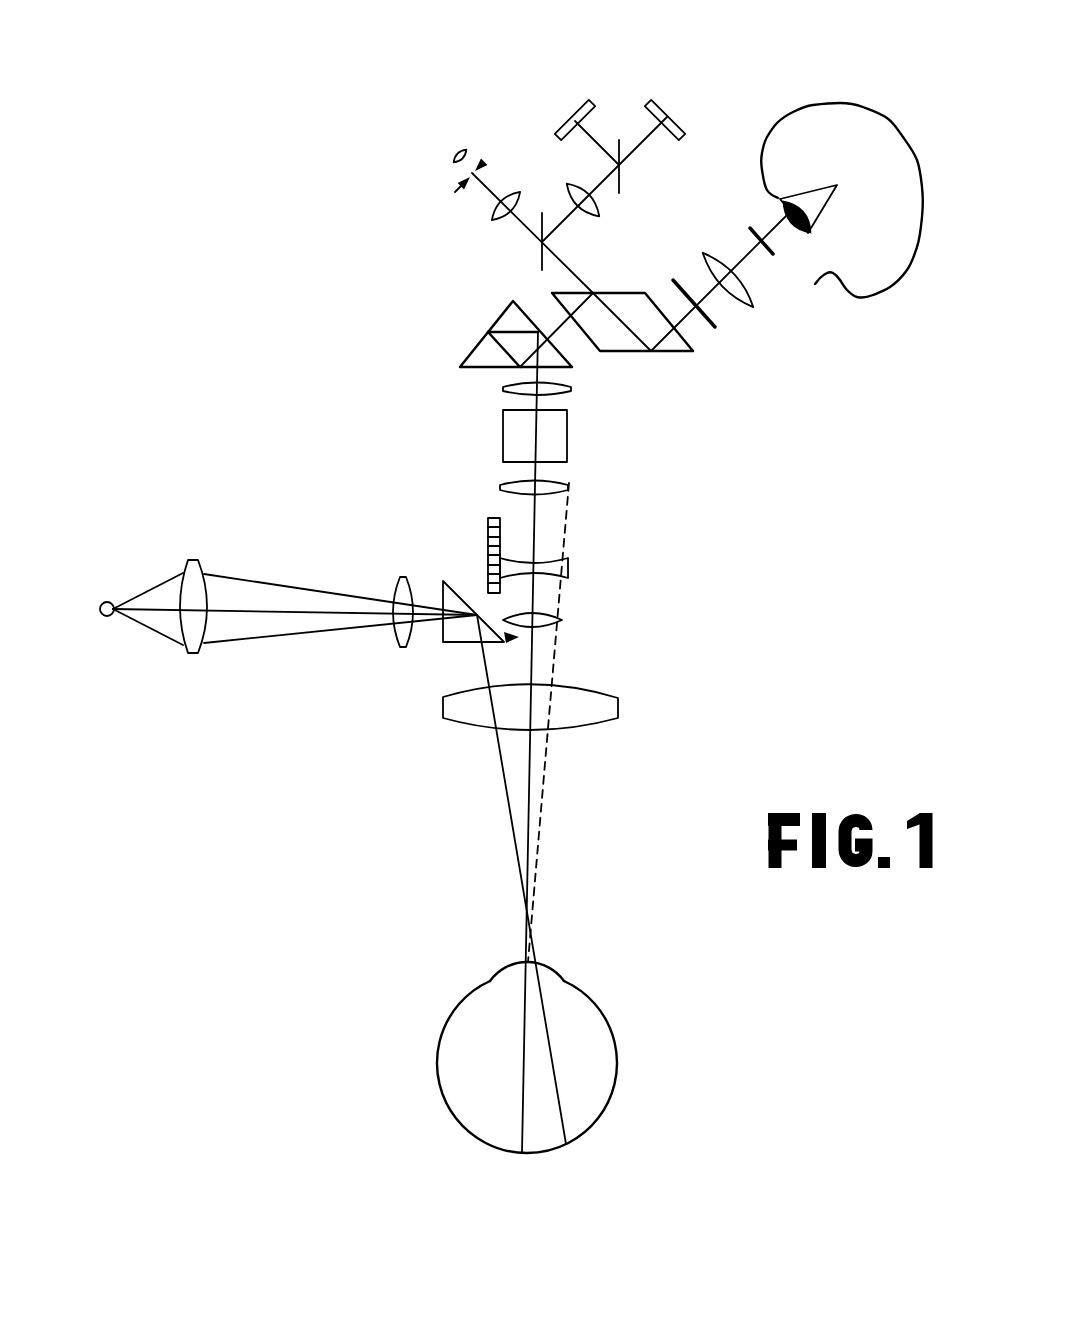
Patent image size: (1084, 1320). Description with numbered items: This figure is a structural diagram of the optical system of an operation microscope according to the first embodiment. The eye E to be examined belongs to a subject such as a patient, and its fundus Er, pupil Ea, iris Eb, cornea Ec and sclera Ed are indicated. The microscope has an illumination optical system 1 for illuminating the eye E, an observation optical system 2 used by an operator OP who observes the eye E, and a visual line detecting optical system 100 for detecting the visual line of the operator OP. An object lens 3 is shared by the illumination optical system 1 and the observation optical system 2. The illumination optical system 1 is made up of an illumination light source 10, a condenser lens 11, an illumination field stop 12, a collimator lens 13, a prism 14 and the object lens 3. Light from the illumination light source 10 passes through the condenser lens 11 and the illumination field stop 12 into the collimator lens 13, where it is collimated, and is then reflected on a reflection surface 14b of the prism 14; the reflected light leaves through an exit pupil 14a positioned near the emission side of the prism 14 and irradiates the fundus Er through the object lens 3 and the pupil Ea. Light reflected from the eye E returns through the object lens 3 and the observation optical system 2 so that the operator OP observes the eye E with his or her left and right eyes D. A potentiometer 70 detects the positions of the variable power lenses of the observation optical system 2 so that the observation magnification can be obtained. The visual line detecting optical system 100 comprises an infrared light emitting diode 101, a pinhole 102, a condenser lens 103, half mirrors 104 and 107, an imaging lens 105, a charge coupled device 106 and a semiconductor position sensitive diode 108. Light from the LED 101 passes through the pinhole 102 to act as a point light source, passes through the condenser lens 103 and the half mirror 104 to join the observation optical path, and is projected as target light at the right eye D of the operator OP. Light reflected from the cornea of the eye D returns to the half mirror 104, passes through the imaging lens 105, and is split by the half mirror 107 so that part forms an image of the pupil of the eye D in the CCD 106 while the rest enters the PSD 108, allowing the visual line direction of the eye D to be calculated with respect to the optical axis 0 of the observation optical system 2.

The illumination optical system 1 is at (323, 806).
The illumination light source 10 is at (107, 601).
The condenser lens 11 is at (190, 562).
The illumination field stop 12 is at (232, 667).
The collimator lens 13 is at (395, 633).
The prism 14 is at (444, 600).
The exit pupil 14a is at (446, 645).
The reflection surface 14b is at (462, 580).
The potentiometer 70 is at (489, 519).
The observation optical system 2 is at (647, 633).
The object lens 3 is at (618, 708).
The optical axis 0 is at (532, 833).
The eye of the operator D is at (796, 237).
The operator OP is at (836, 103).
The visual line detecting optical system 100 is at (562, 167).
The infrared light emitting diode 101 is at (450, 158).
The pinhole 102 is at (481, 162).
The condenser lens 103 is at (490, 210).
The half mirror 104 is at (540, 255).
The imaging lens 105 is at (598, 216).
The charge coupled device 106 is at (681, 118).
The half mirror 107 is at (628, 168).
The semiconductor position sensitive diode 108 is at (578, 111).
The eye to be examined E is at (555, 1048).
The pupil Ea is at (517, 983).
The iris Eb is at (547, 963).
The cornea Ec is at (512, 963).
The sclera Ed is at (566, 981).
The fundus Er is at (489, 1127).